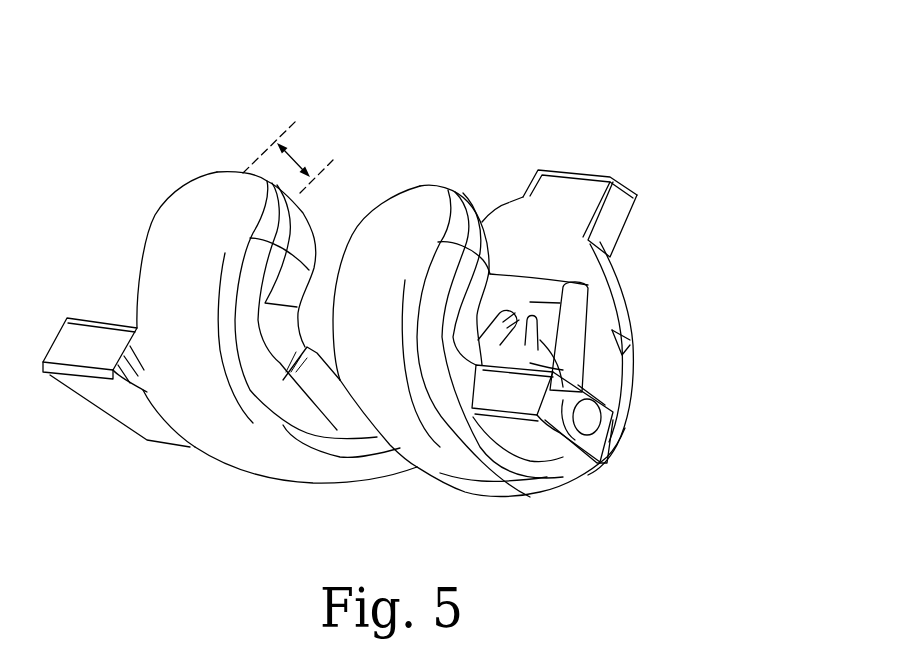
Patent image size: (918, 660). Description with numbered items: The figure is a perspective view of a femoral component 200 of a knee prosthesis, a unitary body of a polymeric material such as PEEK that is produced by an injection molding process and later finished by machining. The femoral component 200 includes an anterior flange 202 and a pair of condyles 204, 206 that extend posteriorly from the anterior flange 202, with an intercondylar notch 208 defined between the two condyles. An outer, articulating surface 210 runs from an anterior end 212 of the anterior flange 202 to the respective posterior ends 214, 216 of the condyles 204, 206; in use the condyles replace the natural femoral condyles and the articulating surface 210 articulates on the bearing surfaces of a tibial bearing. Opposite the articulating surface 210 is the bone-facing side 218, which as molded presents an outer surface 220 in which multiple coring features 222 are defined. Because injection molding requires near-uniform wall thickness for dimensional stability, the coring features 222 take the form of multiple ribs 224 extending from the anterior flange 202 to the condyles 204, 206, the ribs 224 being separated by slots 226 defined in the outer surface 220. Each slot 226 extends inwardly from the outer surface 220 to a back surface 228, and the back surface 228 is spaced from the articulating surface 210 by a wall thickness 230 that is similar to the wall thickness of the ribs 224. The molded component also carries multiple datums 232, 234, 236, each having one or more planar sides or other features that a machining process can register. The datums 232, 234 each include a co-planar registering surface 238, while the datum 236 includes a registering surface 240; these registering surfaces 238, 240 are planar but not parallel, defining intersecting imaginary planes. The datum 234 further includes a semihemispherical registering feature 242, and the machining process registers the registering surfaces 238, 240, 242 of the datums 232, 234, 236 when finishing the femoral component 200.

The femoral component 200 is at (805, 36).
The anterior flange 202 is at (688, 250).
The condyle 204 is at (190, 496).
The condyle 206 is at (483, 523).
The intercondylar notch 208 is at (360, 532).
The articulating surface 210 is at (597, 543).
The anterior end 212 is at (503, 187).
The posterior end 214 is at (217, 159).
The posterior end 216 is at (418, 173).
The bone-facing side 218 is at (374, 110).
The outer surface 220 is at (668, 220).
The coring features 222 is at (653, 393).
The ribs 224 is at (653, 284).
The slots 226 is at (680, 313).
The back surface 228 is at (662, 353).
The wall thickness 230 is at (314, 138).
The datum 232 is at (107, 297).
The datum 234 is at (695, 488).
The datum 236 is at (648, 80).
The registering surface 238 is at (600, 483).
The registering surface 240 is at (567, 193).
The semihemispherical registering feature 242 is at (653, 438).